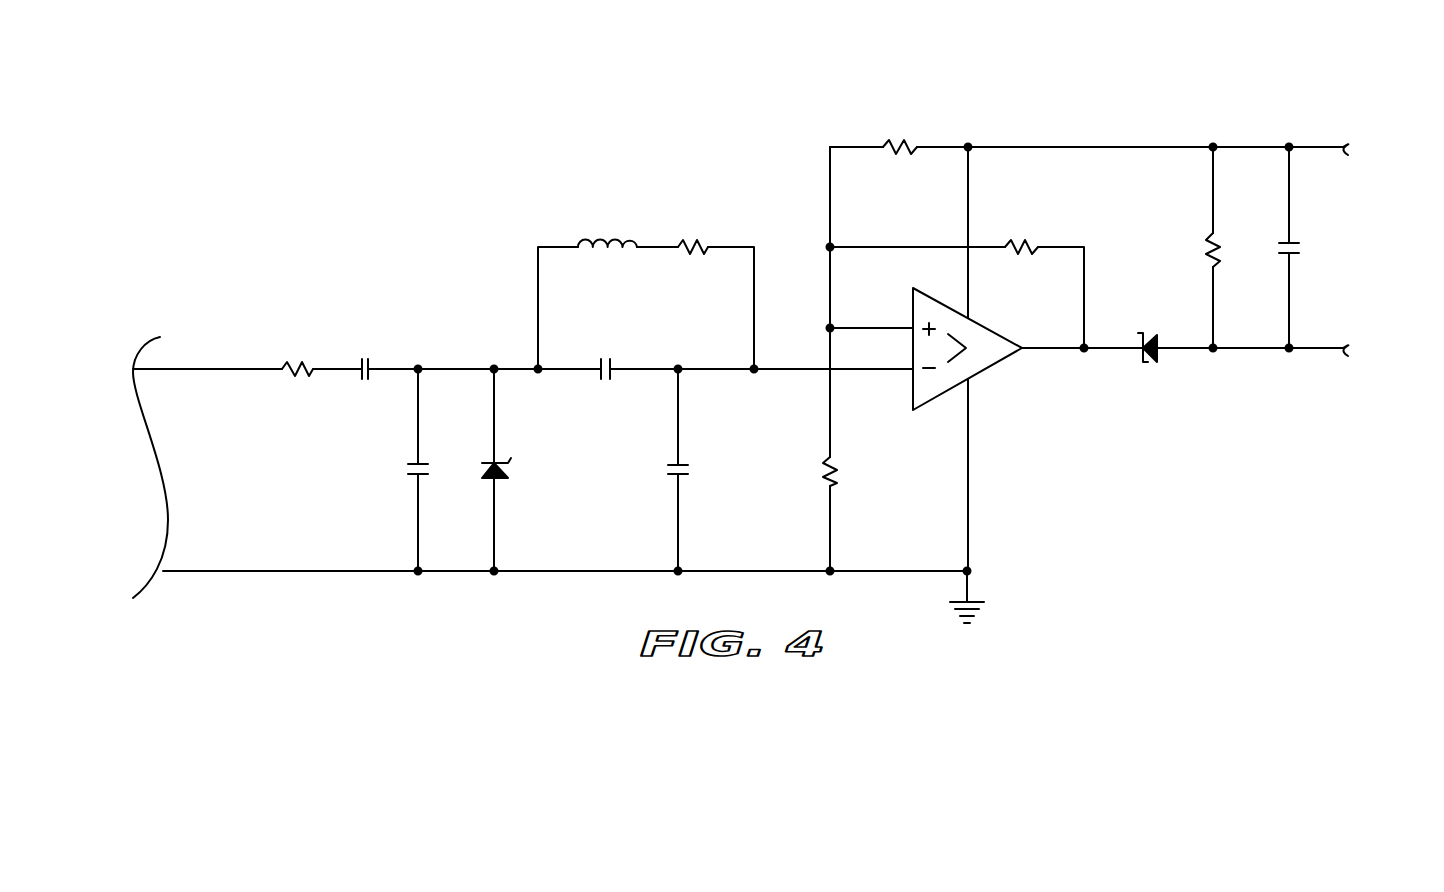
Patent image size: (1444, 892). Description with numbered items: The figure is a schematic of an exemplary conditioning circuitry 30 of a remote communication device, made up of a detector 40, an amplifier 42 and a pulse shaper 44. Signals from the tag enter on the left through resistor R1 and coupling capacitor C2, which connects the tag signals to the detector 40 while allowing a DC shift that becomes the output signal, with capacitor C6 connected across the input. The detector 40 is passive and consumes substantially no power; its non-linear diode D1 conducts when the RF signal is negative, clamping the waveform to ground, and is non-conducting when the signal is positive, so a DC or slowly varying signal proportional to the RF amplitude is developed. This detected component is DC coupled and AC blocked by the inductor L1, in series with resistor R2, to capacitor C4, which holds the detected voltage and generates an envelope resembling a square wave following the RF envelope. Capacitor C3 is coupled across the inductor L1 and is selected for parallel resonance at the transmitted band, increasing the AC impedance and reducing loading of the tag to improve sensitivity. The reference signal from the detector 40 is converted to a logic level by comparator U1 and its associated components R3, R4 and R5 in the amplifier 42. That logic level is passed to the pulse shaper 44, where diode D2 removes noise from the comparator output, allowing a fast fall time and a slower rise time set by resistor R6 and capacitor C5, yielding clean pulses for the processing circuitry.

The conditioning circuitry 30 is at (243, 233).
The detector 40 is at (583, 173).
The amplifier 42 is at (922, 88).
The pulse shaper 44 is at (1213, 97).
The resistor R1 is at (297, 353).
The coupling capacitor C2 is at (366, 354).
The capacitor C6 is at (400, 470).
The diode D1 is at (519, 470).
The inductor L1 is at (607, 227).
The resistor R2 is at (695, 231).
The capacitor C3 is at (607, 354).
The capacitor C4 is at (660, 470).
The resistor R3 is at (848, 471).
The resistor R4 is at (900, 131).
The resistor R5 is at (1021, 232).
The comparator U1 is at (960, 335).
The diode D2 is at (1150, 332).
The resistor R6 is at (1191, 250).
The capacitor C5 is at (1309, 250).